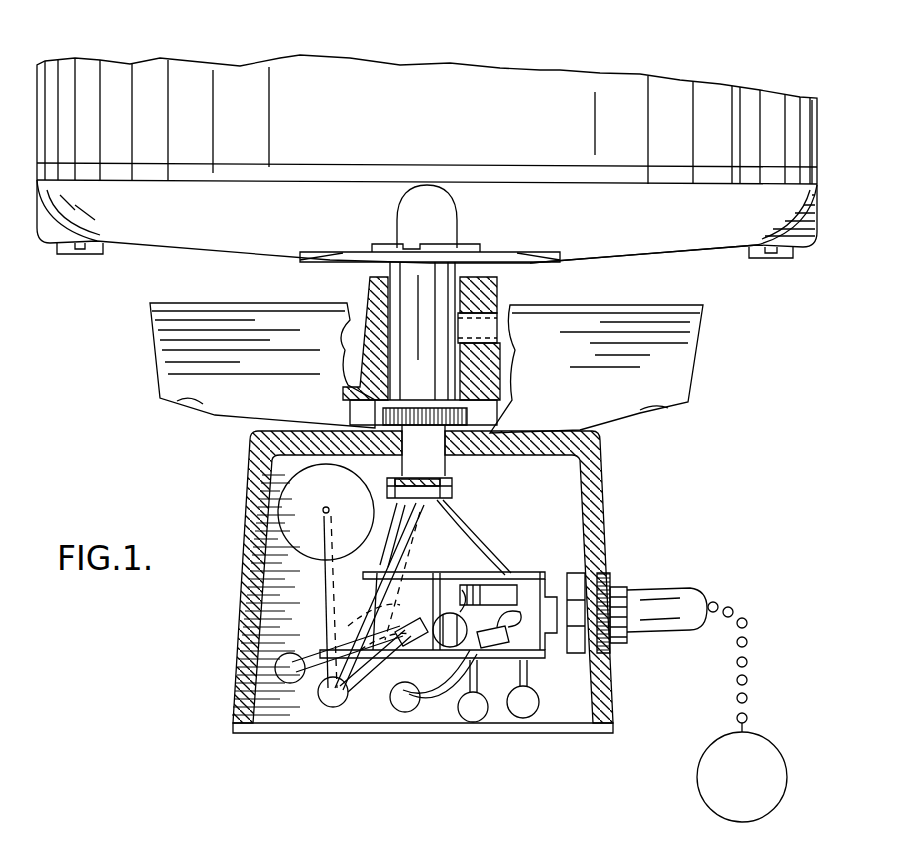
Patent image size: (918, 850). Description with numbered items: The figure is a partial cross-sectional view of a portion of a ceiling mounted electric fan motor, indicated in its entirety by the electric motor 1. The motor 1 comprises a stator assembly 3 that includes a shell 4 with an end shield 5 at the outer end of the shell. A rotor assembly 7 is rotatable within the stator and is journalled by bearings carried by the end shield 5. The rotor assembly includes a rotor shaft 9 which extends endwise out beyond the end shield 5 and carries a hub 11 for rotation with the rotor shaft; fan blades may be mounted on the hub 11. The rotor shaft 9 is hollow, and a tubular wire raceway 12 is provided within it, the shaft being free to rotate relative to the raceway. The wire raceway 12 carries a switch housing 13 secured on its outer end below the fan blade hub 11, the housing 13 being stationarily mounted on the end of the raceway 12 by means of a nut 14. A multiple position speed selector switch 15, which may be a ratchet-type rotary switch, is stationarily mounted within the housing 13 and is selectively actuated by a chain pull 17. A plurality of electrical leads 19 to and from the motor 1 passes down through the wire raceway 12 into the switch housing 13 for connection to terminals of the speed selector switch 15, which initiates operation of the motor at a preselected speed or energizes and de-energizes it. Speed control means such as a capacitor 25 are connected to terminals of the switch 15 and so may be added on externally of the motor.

The electric motor 1 is at (806, 82).
The stator assembly 3 is at (819, 125).
The shell 4 is at (745, 115).
The end shield 5 is at (702, 255).
The rotor assembly 7 is at (386, 264).
The rotor shaft 9 is at (423, 302).
The hub 11 is at (700, 362).
The tubular wire raceway 12 is at (424, 448).
The switch housing 13 is at (604, 498).
The nut 14 is at (455, 488).
The speed selector switch 15 is at (529, 572).
The chain pull 17 is at (750, 618).
The electrical leads 19 is at (498, 537).
The capacitor 25 is at (250, 490).